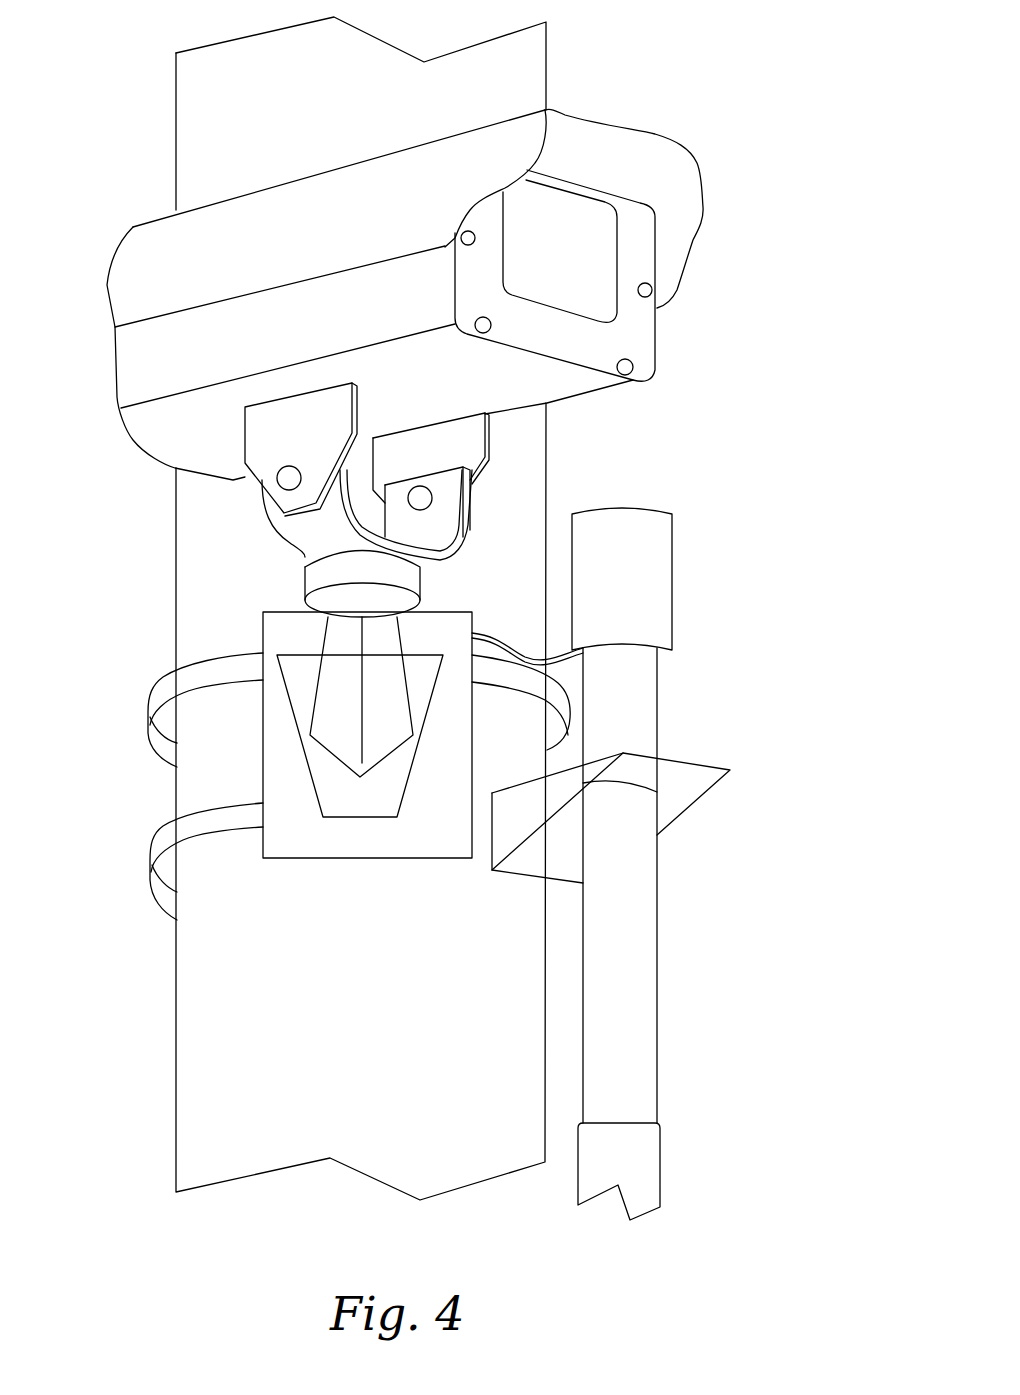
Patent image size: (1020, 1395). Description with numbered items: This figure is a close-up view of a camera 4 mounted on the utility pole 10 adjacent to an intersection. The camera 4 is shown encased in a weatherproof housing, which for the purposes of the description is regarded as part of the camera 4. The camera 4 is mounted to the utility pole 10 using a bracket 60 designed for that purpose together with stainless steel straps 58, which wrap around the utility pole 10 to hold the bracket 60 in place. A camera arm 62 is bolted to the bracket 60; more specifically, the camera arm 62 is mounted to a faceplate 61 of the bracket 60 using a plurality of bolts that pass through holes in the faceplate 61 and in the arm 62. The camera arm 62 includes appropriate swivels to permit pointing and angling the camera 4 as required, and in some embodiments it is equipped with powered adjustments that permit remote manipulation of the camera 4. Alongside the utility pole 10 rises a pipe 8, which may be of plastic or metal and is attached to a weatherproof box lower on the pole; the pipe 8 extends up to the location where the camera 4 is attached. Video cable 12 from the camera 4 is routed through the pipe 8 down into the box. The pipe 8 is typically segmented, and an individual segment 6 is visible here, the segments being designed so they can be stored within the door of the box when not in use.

The utility pole 10 is at (203, 105).
The camera 4 is at (163, 253).
The bracket 60 is at (288, 628).
The faceplate 61 is at (280, 747).
The camera arm 62 is at (337, 773).
The stainless steel straps 58 is at (197, 682).
The video cable 12 is at (567, 697).
The segments 6 is at (632, 958).
The pipe 8 is at (666, 1119).